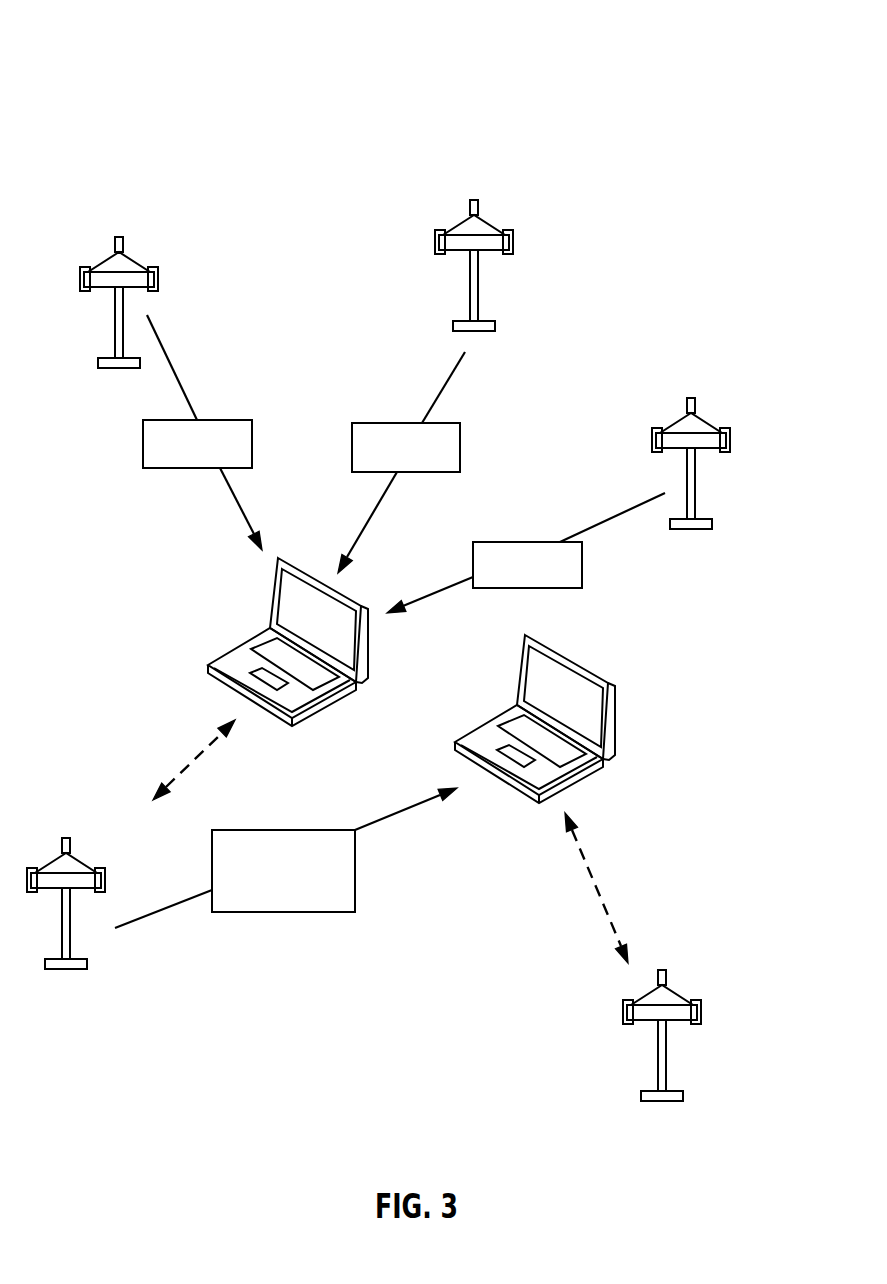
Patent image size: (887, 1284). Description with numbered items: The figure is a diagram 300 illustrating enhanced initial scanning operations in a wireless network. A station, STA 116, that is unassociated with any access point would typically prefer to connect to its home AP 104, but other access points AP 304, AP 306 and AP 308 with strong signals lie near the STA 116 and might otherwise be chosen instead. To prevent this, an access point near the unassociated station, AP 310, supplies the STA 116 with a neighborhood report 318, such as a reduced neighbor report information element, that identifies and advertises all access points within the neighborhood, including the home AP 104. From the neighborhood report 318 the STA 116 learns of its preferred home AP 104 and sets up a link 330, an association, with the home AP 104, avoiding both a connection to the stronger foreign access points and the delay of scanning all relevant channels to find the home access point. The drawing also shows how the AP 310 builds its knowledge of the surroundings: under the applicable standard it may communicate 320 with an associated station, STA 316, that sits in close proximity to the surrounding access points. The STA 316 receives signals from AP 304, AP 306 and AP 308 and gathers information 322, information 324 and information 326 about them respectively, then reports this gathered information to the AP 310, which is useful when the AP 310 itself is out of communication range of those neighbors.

The diagram 300 is at (166, 38).
The AP 304 is at (120, 236).
The AP 306 is at (474, 199).
The AP 308 is at (691, 398).
The AP 310 is at (67, 837).
The home AP 104 is at (664, 969).
The STA 316 is at (232, 657).
The STA 116 is at (604, 677).
The information 322 is at (226, 420).
The information 324 is at (400, 423).
The information 326 is at (530, 542).
The neighborhood report 318 is at (278, 912).
The communication 320 is at (187, 765).
The link 330 is at (587, 865).